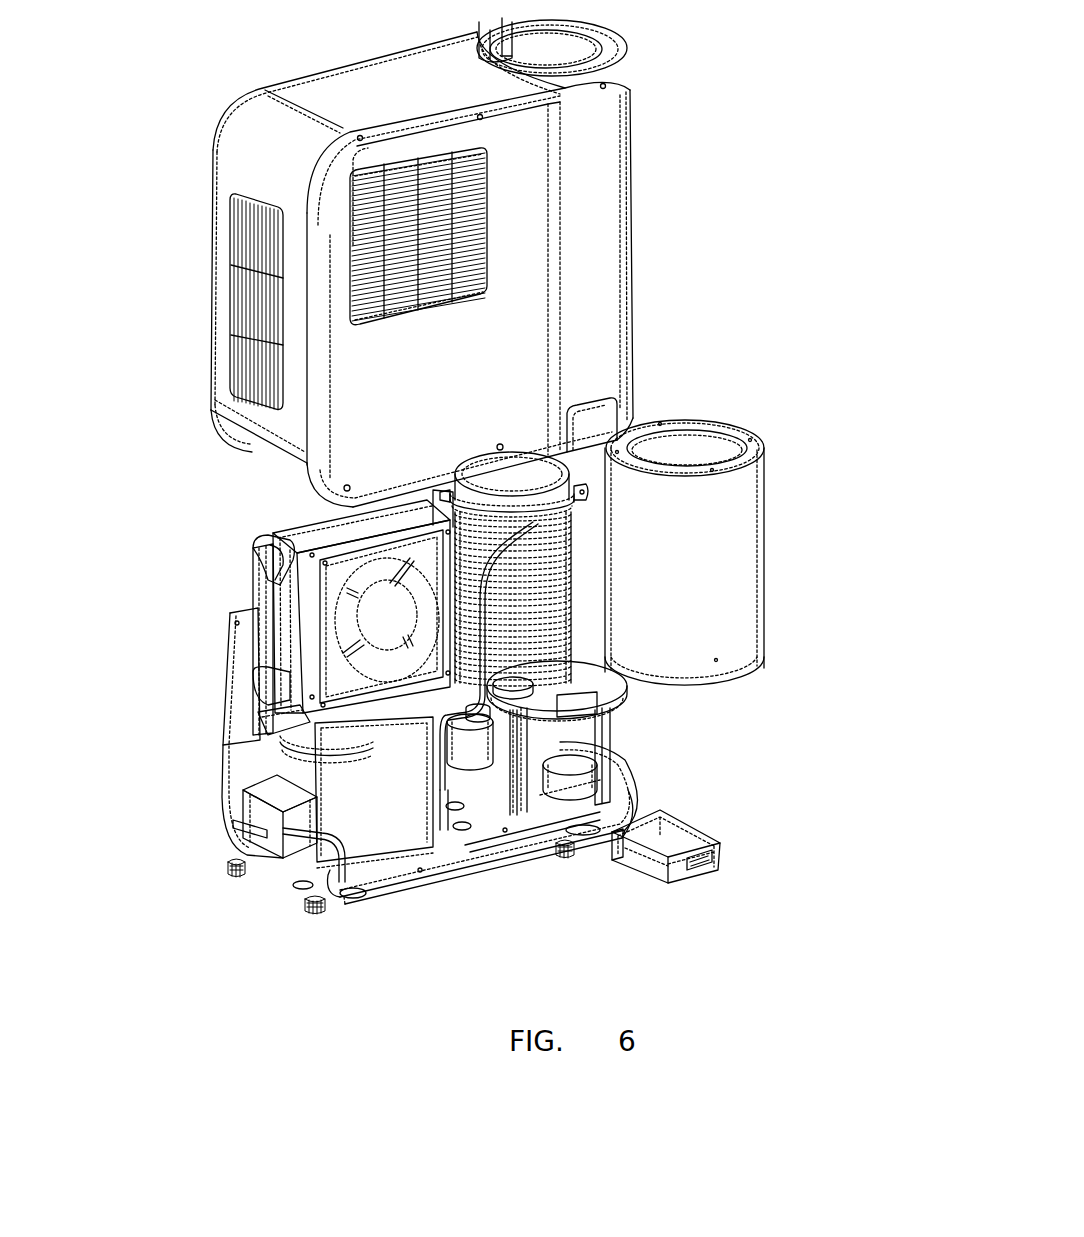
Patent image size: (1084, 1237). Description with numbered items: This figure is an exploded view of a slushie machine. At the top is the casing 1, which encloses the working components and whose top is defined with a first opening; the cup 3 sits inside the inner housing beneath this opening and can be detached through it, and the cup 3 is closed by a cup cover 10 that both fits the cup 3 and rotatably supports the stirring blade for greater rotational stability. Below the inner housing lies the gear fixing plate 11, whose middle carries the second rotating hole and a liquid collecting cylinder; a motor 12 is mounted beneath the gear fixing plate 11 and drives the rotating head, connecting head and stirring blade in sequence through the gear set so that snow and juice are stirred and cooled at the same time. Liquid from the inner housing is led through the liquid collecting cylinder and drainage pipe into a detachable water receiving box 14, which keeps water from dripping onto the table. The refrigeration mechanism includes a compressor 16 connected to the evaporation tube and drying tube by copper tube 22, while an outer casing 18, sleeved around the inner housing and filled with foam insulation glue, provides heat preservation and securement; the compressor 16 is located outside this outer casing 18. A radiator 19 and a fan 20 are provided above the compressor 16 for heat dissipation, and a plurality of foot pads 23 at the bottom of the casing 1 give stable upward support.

The casing 1 is at (603, 103).
The cup 3 is at (550, 490).
The cup cover 10 is at (508, 477).
The gear fixing plate 11 is at (620, 673).
The motor 12 is at (470, 770).
The water receiving box 14 is at (677, 847).
The compressor 16 is at (293, 762).
The outer casing 18 is at (713, 595).
The radiator 19 is at (283, 630).
The fan 20 is at (303, 715).
The copper tube 22 is at (573, 587).
The foot pads 23 is at (232, 870).